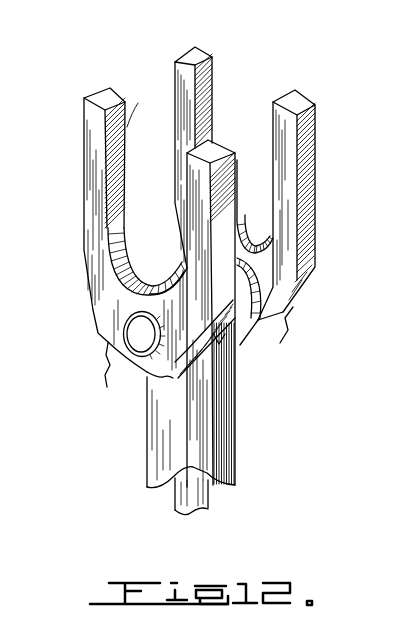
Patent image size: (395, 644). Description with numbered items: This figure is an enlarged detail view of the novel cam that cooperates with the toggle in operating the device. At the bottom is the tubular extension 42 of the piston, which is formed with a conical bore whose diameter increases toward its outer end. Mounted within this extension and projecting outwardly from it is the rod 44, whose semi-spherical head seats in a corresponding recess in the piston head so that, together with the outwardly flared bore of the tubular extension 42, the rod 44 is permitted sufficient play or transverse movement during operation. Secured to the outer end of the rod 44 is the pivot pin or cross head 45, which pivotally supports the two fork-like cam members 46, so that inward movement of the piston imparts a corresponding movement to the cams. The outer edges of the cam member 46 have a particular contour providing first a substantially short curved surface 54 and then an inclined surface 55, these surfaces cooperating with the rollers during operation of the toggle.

The tubular extension 42 is at (212, 434).
The rod 44 is at (200, 497).
The pivot pin or cross head 45 is at (130, 330).
The fork-like cam member 46 is at (183, 85).
The short curved surface 54 is at (163, 378).
The inclined surface 55 is at (237, 345).